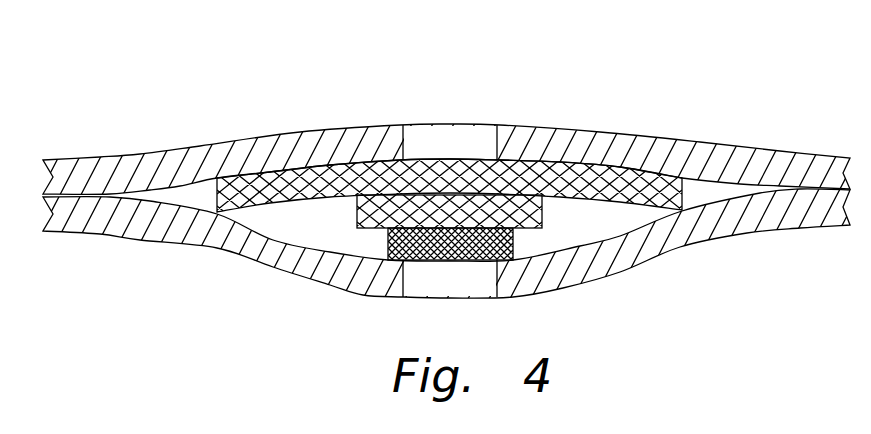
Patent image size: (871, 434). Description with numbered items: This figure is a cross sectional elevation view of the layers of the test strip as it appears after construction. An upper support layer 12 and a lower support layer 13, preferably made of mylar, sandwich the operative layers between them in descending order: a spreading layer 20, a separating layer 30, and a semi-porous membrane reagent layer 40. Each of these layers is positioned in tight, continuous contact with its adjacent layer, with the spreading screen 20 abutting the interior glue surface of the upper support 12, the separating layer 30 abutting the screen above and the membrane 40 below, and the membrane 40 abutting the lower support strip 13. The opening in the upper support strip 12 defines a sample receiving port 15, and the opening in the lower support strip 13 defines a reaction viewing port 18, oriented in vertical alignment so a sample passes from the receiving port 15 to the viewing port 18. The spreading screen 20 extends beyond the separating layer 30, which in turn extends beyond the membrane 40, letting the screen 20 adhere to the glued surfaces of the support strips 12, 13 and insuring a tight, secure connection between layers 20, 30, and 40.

The upper support layer 12 is at (297, 131).
The lower support layer 13 is at (625, 268).
The sample receiving port 15 is at (457, 137).
The reaction viewing port 18 is at (427, 290).
The spreading layer 20 is at (657, 158).
The separating layer 30 is at (522, 200).
The semi-porous membrane reagent layer 40 is at (386, 252).